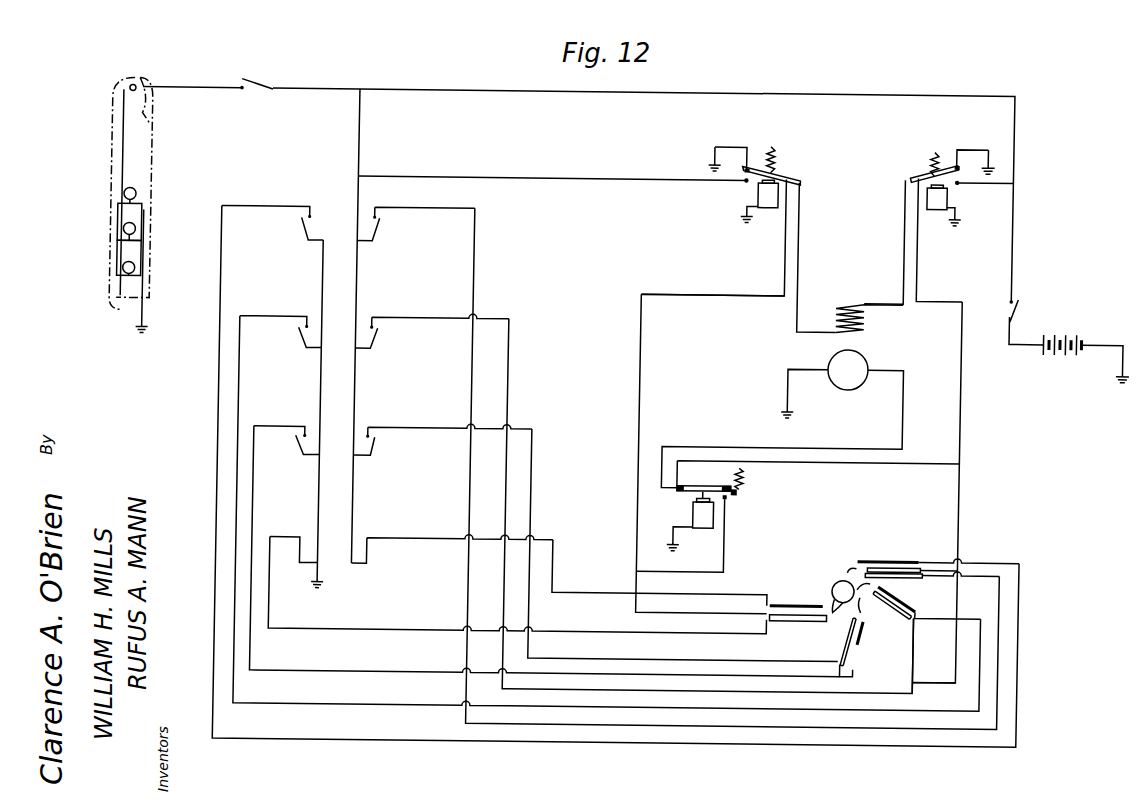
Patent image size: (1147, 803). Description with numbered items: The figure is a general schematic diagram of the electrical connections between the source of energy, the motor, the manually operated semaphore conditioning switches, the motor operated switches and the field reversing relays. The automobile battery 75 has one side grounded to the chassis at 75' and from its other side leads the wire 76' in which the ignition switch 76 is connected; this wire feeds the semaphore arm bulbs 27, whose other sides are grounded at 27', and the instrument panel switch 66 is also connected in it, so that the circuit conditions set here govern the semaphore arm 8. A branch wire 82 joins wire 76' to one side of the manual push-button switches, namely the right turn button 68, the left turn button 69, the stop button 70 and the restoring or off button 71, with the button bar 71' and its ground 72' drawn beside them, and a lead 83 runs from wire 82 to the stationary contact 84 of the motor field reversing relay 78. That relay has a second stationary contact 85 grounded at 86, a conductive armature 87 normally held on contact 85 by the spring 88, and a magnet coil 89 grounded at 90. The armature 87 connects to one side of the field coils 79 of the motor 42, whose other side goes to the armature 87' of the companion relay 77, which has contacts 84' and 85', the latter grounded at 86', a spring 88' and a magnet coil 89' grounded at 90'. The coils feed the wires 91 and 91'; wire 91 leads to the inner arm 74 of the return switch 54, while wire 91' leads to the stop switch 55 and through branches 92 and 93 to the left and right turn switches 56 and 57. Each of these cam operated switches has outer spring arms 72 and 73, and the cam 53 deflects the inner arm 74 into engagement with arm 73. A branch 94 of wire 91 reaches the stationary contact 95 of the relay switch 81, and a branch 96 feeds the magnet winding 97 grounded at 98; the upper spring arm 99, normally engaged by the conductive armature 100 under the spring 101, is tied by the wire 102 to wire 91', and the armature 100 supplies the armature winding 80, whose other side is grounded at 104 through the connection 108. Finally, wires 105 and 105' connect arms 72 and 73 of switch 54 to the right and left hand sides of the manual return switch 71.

The semaphore arm 8 is at (104, 173).
The semaphore arm bulbs 27 is at (152, 215).
The ground of semaphore arm bulbs 27' is at (117, 281).
The motor 42 is at (794, 348).
The cam 53 is at (834, 590).
The return switch 54 is at (793, 592).
The stop switch 55 is at (845, 637).
The left turn switch 56 is at (907, 618).
The right turn switch 57 is at (923, 546).
The instrument panel switch 66 is at (254, 79).
The right turn button 68 is at (336, 212).
The left turn button 69 is at (330, 326).
The stop button 70 is at (349, 438).
The restoring or off button 71 is at (411, 536).
The controller bar 71' is at (298, 411).
The outer spring arm 72 is at (932, 589).
The controller ground 72' is at (343, 593).
The outer spring arm 73 is at (895, 550).
The inner arm 74 is at (856, 565).
The automobile battery 75 is at (1083, 336).
The chassis ground of battery 75' is at (1100, 390).
The ignition switch 76 is at (1034, 315).
The wire 76' is at (643, 182).
The companion field reversing relay 77 is at (922, 121).
The motor field reversing relay 78 is at (787, 162).
The field coils 79 is at (870, 316).
The armature winding 80 is at (870, 356).
The relay switch 81 is at (754, 491).
The branch wire 82 is at (358, 128).
The lead 83 is at (522, 176).
The stationary contact 84 is at (718, 194).
The stationary contact 84' is at (983, 198).
The second stationary contact 85 is at (736, 146).
The stationary contact 85' is at (968, 145).
The ground 86 is at (696, 158).
The ground 86' is at (995, 151).
The conductive armature 87 is at (781, 172).
The conductive armature 87' is at (921, 167).
The spring 88 is at (783, 148).
The spring 88' is at (925, 149).
The magnet coil 89 is at (741, 199).
The magnet coil 89' is at (938, 219).
The ground 90 is at (741, 230).
The ground 90' is at (972, 232).
The wire 91 is at (710, 454).
The wire 91' is at (960, 492).
The branch 92 is at (944, 618).
The branch 93 is at (978, 552).
The branch 94 is at (733, 537).
The stationary contact 95 is at (736, 496).
The branch 96 is at (686, 508).
The magnet winding 97 is at (711, 524).
The ground 98 is at (676, 544).
The upper spring arm 99 is at (716, 482).
The conductive armature 100 is at (696, 481).
The spring 101 is at (752, 470).
The wire 102 is at (858, 458).
The ground 104 is at (788, 405).
The wire 105 is at (660, 573).
The wire 105' is at (518, 585).
The conductor 108 is at (830, 443).